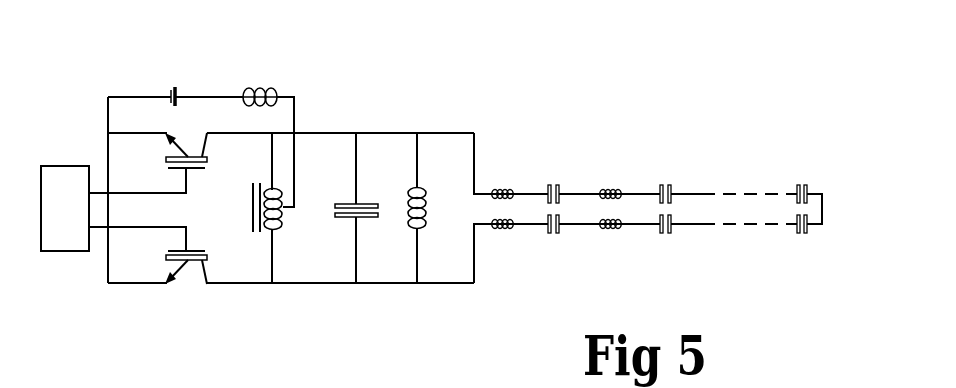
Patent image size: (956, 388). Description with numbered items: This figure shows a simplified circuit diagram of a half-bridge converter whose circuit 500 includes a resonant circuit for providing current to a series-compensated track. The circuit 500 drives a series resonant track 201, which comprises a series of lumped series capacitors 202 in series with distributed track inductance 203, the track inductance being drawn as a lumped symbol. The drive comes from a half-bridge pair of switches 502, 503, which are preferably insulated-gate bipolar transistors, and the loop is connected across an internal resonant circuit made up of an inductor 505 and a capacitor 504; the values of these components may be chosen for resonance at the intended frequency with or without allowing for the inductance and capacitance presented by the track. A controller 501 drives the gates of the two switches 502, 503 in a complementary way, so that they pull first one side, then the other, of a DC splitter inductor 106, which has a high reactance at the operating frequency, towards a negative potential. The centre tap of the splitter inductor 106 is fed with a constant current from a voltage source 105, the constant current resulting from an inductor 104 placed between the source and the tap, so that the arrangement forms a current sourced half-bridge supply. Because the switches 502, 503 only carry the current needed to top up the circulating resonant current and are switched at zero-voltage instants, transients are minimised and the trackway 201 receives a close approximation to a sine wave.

The circuit 500 is at (586, 95).
The controller 501 is at (58, 167).
The switch 502 is at (166, 157).
The switch 503 is at (167, 259).
The inductor 104 is at (267, 87).
The voltage source 105 is at (172, 82).
The DC splitter inductor 106 is at (254, 231).
The capacitor 504 is at (335, 220).
The inductor 505 is at (406, 228).
The series resonant track 201 is at (738, 160).
The series capacitors 202 is at (572, 160).
The track inductance 203 is at (638, 160).